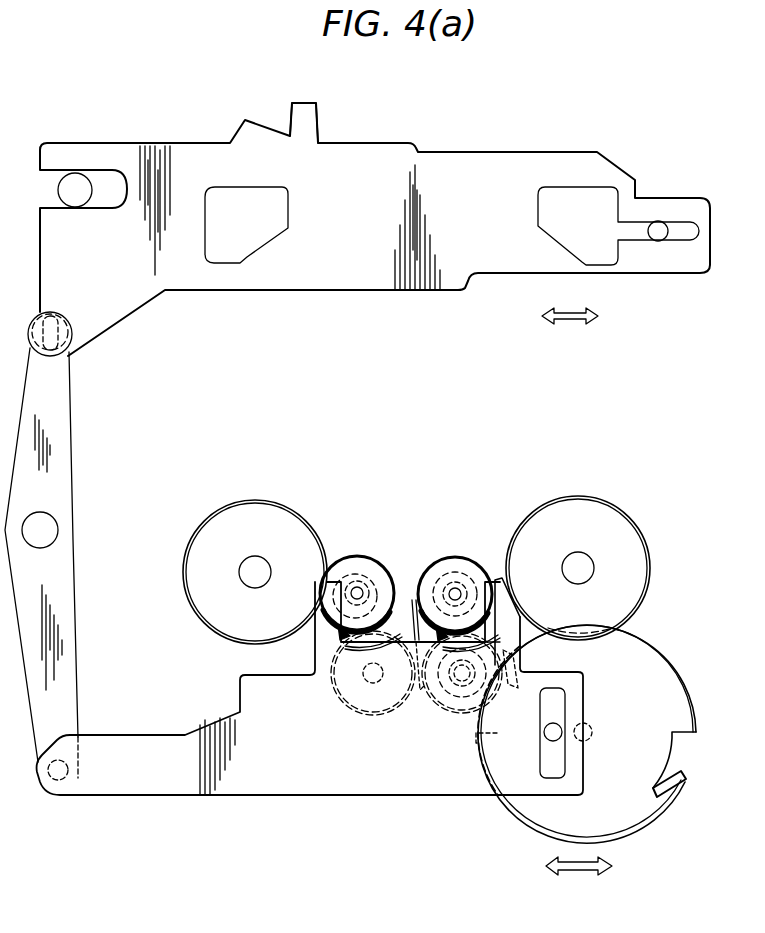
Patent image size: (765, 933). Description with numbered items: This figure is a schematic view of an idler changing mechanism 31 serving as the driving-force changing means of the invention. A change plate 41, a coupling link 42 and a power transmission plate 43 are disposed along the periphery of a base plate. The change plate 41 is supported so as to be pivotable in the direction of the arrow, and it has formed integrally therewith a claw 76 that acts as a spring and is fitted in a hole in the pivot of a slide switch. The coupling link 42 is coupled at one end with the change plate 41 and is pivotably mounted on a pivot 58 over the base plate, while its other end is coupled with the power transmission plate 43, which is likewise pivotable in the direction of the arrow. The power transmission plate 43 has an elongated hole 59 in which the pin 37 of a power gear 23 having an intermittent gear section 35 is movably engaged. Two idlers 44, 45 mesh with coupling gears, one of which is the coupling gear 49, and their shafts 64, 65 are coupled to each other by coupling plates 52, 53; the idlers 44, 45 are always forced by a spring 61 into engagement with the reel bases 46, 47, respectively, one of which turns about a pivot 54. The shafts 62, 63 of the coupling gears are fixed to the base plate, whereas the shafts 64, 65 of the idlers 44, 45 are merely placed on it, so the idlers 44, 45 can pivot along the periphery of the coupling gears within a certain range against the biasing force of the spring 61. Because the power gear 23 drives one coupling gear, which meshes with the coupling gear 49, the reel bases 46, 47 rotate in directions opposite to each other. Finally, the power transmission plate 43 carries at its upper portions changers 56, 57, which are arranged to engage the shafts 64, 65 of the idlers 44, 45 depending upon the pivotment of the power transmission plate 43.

The power gear 23 is at (675, 712).
The drive mechanism 31 is at (500, 402).
The intermittent gear section 35 is at (686, 783).
The pin 37 is at (560, 738).
The change plate 41 is at (347, 282).
The coupling link 42 is at (60, 449).
The power transmission plate 43 is at (147, 738).
The idler 44 is at (352, 556).
The idler 45 is at (437, 558).
The reel base 46 is at (304, 513).
The reel base 47 is at (595, 497).
The coupling gear 49 is at (500, 650).
The coupling plate 52 is at (352, 686).
The coupling plate 53 is at (447, 690).
The pivot 54 is at (253, 582).
The changer 56 is at (322, 632).
The changer 57 is at (496, 580).
The pivot 58 is at (45, 525).
The slot 59 is at (560, 695).
The spring 61 is at (413, 632).
The shaft 62 is at (369, 684).
The shaft 63 is at (462, 685).
The shaft 64 is at (363, 585).
The shaft 65 is at (458, 587).
The claw 76 is at (312, 118).